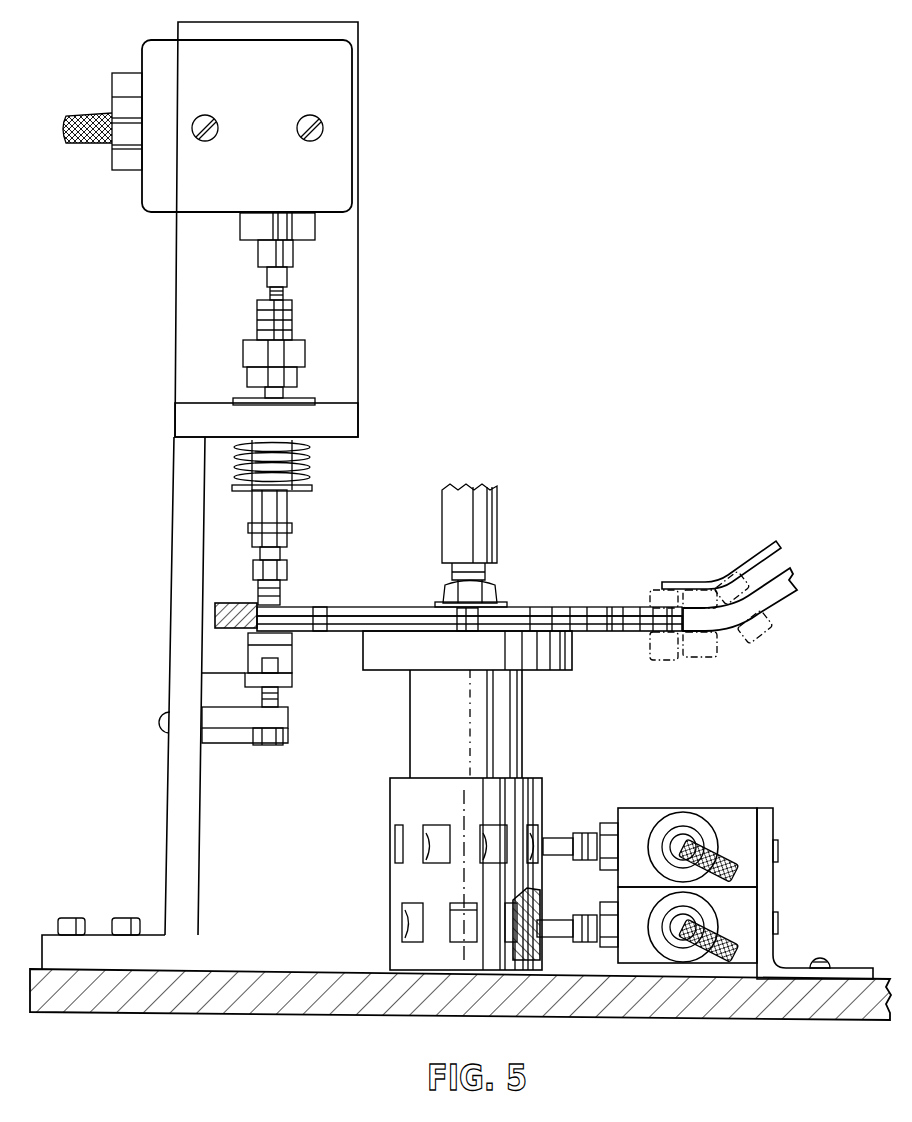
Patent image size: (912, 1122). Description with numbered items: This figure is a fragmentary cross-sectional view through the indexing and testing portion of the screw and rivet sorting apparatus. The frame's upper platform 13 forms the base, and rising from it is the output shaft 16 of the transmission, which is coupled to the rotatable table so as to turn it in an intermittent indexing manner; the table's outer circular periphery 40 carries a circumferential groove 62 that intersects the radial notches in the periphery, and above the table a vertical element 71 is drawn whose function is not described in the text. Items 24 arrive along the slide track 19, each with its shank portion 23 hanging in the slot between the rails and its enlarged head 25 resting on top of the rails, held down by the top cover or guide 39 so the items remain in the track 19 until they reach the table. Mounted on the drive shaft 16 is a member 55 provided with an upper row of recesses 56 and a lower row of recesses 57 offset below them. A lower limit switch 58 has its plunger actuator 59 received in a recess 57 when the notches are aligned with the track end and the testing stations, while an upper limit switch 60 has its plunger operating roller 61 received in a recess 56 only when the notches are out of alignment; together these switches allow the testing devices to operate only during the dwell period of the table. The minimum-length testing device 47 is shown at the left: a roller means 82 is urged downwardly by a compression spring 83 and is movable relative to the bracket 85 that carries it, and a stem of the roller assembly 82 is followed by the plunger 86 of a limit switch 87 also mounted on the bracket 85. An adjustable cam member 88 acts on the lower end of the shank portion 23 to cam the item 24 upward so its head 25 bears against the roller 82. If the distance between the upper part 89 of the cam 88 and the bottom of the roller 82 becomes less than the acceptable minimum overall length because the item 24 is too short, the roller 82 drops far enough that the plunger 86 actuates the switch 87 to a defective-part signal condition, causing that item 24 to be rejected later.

The upper platform 13 is at (283, 977).
The output shaft 16 is at (427, 718).
The slide track 19 is at (770, 595).
The shank portion 23 is at (258, 597).
The item 24 is at (284, 590).
The enlarged head 25 is at (253, 570).
The top cover or guide 39 is at (753, 557).
The outer circular periphery 40 is at (425, 583).
The testing device 47 is at (372, 261).
The member 55 is at (407, 800).
The recesses 56 is at (540, 830).
The recesses 57 is at (542, 908).
The limit switch 58 is at (740, 907).
The plunger actuator 59 is at (543, 925).
The upper limit switch 60 is at (743, 832).
The plunger operating roller 61 is at (543, 845).
The circumferential groove 62 is at (353, 617).
The vertical cylinder 71 is at (488, 533).
The roller means 82 is at (283, 545).
The compression spring 83 is at (312, 462).
The bracket 85 is at (337, 420).
The plunger 86 is at (270, 252).
The limit switch 87 is at (337, 85).
The adjustable cam member 88 is at (280, 652).
The upper part of cam 89 is at (243, 623).